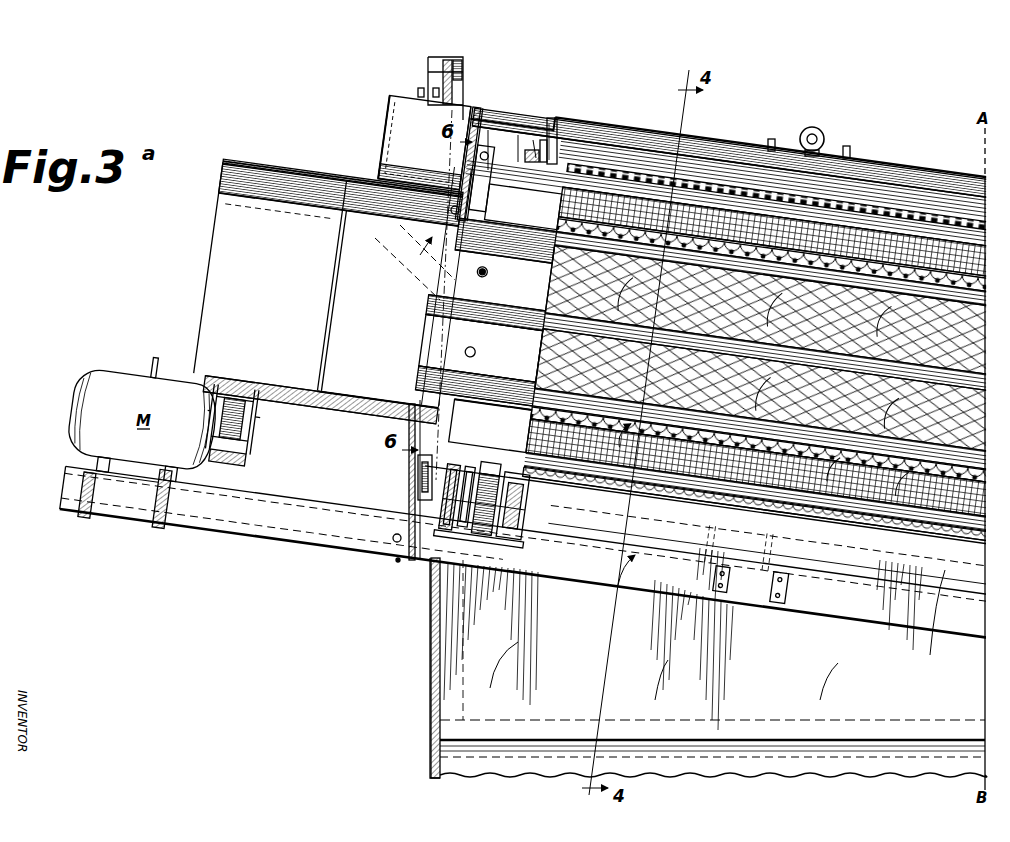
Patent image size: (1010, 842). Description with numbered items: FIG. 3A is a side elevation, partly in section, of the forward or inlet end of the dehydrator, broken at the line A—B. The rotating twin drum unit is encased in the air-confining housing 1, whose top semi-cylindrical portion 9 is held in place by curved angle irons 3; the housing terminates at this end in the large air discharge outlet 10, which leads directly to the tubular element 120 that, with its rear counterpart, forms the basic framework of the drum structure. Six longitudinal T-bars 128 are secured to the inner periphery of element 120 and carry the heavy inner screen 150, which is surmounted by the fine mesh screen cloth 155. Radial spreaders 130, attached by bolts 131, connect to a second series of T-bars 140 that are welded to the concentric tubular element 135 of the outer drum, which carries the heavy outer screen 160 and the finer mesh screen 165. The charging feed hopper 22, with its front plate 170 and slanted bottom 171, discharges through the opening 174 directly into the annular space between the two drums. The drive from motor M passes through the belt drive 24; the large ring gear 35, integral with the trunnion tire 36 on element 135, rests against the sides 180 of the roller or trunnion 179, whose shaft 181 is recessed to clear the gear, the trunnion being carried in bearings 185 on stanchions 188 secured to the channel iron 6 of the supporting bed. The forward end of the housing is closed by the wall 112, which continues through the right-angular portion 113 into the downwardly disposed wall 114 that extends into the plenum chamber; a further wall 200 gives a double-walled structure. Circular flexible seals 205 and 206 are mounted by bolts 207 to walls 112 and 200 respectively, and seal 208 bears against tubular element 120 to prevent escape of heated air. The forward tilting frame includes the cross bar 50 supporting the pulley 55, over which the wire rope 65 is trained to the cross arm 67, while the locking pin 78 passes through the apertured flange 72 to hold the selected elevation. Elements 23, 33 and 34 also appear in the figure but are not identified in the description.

The housing 1 is at (632, 131).
The curved angle irons 3 is at (845, 158).
The channel iron 6 is at (285, 540).
The upper curved portion of housing 9 is at (710, 152).
The air discharge outlet 10 is at (278, 283).
The charging feed hopper 22 is at (423, 120).
The pulley 23 is at (258, 421).
The belt drive 24 is at (233, 487).
The support bracket 33 is at (92, 519).
The support bracket 34 is at (166, 526).
The ring gear 35 is at (524, 150).
The trunnion tire 36 is at (518, 135).
The cross bar 50 is at (463, 62).
The pulley 55 is at (418, 92).
The wire rope 65 is at (414, 412).
The lateral cross arm 67 is at (396, 560).
The flange 72 is at (430, 630).
The locking pin 78 is at (393, 538).
The forward wall 112 is at (467, 160).
The right-angular portion 113 is at (412, 572).
The downwardly disposed wall 114 is at (448, 653).
The tubular element 120 is at (370, 192).
The T-bars 128 is at (497, 331).
The spreaders 130 is at (502, 212).
The bolts 131 is at (488, 277).
The concentric tubular element 135 is at (488, 130).
The T-bars 140 is at (502, 451).
The inner screen 150 is at (672, 486).
The fine mesh screen cloth 155 is at (768, 462).
The outer screen 160 is at (886, 205).
The finer mesh screen 165 is at (930, 215).
The front plate 170 is at (392, 136).
The slanted bottom 171 is at (420, 255).
The opening 174 is at (430, 292).
The roller or trunnion 179 is at (521, 479).
The sides 180 is at (467, 520).
The shaft 181 is at (490, 526).
The bearings 185 is at (418, 468).
The stanchions 188 is at (496, 508).
The further wall 200 is at (556, 126).
The seal 205 is at (467, 146).
The seal 206 is at (534, 140).
The bolts 207 is at (545, 140).
The seal 208 is at (452, 209).